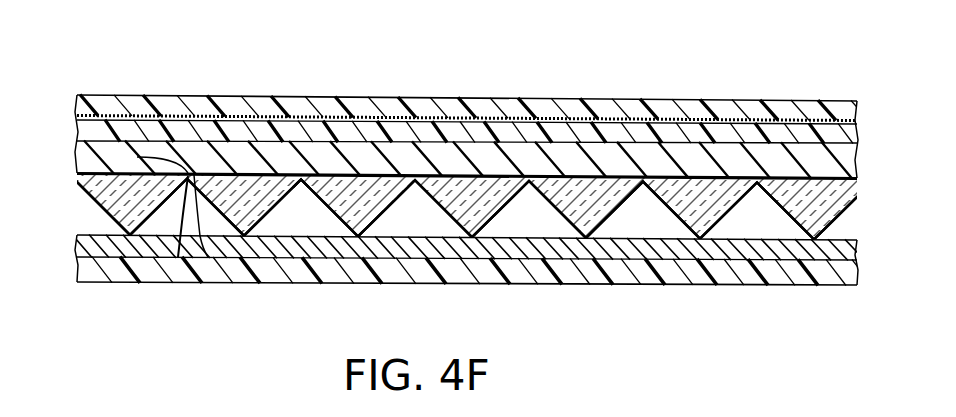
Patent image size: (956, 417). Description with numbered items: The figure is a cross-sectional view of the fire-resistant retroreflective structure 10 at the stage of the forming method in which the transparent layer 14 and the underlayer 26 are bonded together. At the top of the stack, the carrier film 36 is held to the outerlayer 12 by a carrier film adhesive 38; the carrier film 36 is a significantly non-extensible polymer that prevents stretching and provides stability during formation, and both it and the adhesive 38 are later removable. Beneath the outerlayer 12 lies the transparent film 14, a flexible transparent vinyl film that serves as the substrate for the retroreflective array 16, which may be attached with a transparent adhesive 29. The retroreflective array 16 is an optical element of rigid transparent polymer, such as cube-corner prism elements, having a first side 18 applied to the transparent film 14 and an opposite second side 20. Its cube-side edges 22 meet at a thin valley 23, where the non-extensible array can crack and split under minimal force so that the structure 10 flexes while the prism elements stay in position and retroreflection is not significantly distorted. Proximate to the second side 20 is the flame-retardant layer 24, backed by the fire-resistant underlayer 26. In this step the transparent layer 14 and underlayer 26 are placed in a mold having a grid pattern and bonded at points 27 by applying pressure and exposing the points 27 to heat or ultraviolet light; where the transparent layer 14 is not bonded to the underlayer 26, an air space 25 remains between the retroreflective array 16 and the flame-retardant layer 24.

The retroreflective structure 10 is at (852, 74).
The outerlayer 12 is at (467, 97).
The transparent film 14 is at (467, 117).
The retroreflective array 16 is at (467, 256).
The first side 18 is at (467, 118).
The second side 20 is at (472, 259).
The cube-side edges 22 is at (472, 254).
The valley 23 is at (310, 206).
The flame-retardant layer 24 is at (468, 286).
The air space 25 is at (472, 259).
The underlayer 26 is at (474, 302).
The points 27 is at (121, 188).
The transparent adhesive 29 is at (467, 115).
The carrier film 36 is at (474, 83).
The carrier film adhesive 38 is at (467, 84).